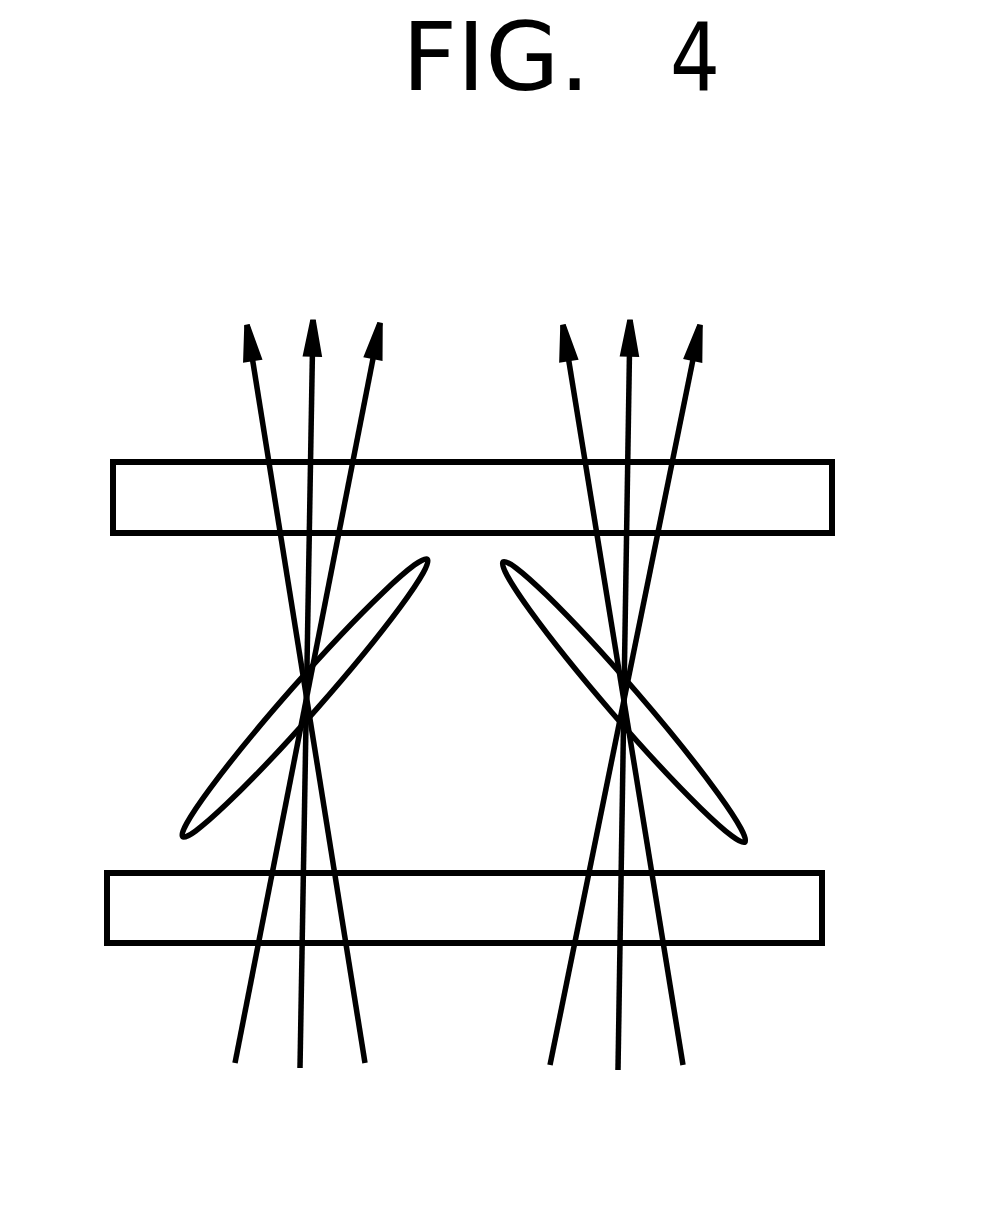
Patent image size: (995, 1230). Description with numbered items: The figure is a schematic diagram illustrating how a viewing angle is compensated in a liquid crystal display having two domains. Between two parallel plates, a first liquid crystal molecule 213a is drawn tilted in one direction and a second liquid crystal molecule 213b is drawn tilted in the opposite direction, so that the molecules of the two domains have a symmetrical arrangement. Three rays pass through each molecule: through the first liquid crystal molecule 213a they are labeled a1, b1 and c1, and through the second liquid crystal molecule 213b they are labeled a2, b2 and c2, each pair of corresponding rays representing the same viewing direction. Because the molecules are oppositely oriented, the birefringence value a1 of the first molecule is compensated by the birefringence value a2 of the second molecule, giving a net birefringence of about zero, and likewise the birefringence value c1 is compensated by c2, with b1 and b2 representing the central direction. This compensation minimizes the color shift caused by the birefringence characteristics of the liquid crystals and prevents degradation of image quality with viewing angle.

The first liquid crystal molecule 213a is at (240, 762).
The second liquid crystal molecule 213b is at (690, 762).
The birefringence value a1 is at (297, 669).
The birefringence value b1 is at (317, 672).
The birefringence value c1 is at (320, 669).
The birefringence value a2 is at (615, 670).
The birefringence value b2 is at (636, 673).
The birefringence value c2 is at (640, 670).